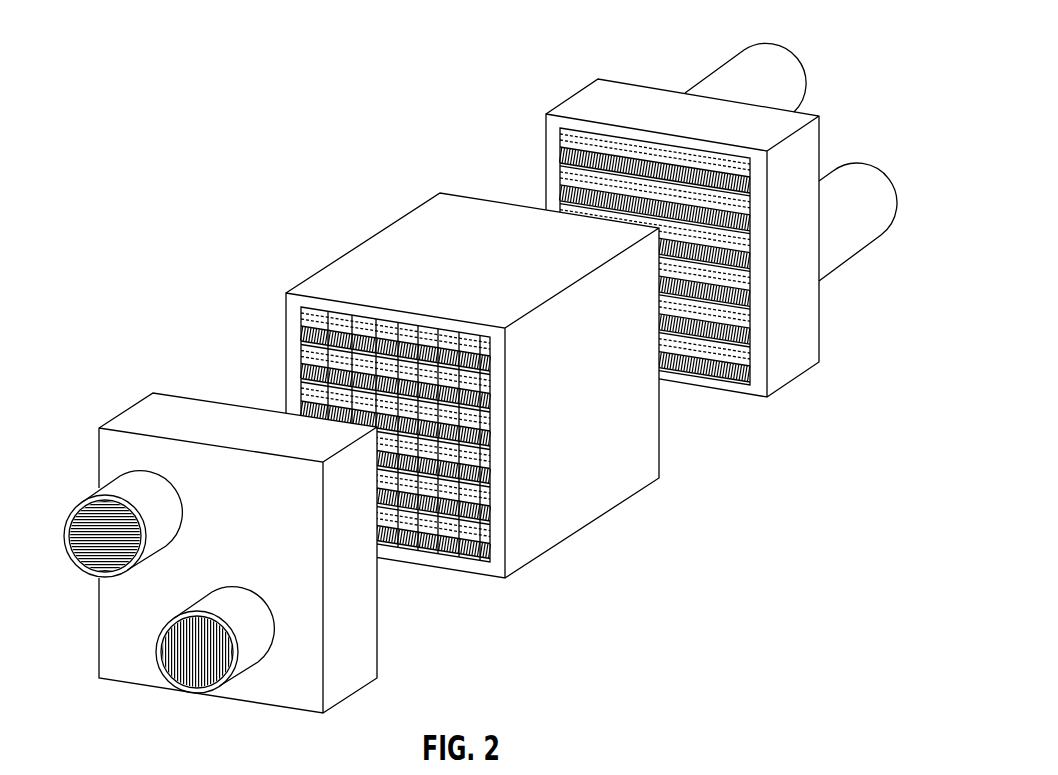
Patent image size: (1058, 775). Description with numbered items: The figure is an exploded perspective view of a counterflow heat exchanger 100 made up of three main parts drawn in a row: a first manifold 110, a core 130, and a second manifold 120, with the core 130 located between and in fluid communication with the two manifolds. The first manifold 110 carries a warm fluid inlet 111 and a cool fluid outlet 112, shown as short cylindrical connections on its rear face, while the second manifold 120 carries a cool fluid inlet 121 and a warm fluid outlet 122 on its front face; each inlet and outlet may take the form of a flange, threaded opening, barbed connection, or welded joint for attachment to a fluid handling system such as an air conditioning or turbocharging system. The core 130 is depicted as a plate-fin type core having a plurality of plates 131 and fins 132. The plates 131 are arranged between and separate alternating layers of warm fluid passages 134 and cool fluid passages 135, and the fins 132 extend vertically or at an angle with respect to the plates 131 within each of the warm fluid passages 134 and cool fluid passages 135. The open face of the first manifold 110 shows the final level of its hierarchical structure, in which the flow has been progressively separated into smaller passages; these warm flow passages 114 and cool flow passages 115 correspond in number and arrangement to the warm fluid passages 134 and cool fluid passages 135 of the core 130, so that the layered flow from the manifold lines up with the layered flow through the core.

The counterflow heat exchanger 100 is at (271, 165).
The first manifold 110 is at (587, 100).
The warm fluid inlet 111 is at (847, 164).
The cool fluid outlet 112 is at (777, 46).
The warm flow passages 114 is at (750, 374).
The cool flow passages 115 is at (560, 210).
The second manifold 120 is at (147, 410).
The cool fluid inlet 121 is at (105, 580).
The warm fluid outlet 122 is at (163, 683).
The core 130 is at (345, 262).
The plates 131 is at (421, 548).
The fins 132 is at (489, 552).
The warm fluid passages 134 is at (490, 551).
The cool fluid passages 135 is at (301, 388).